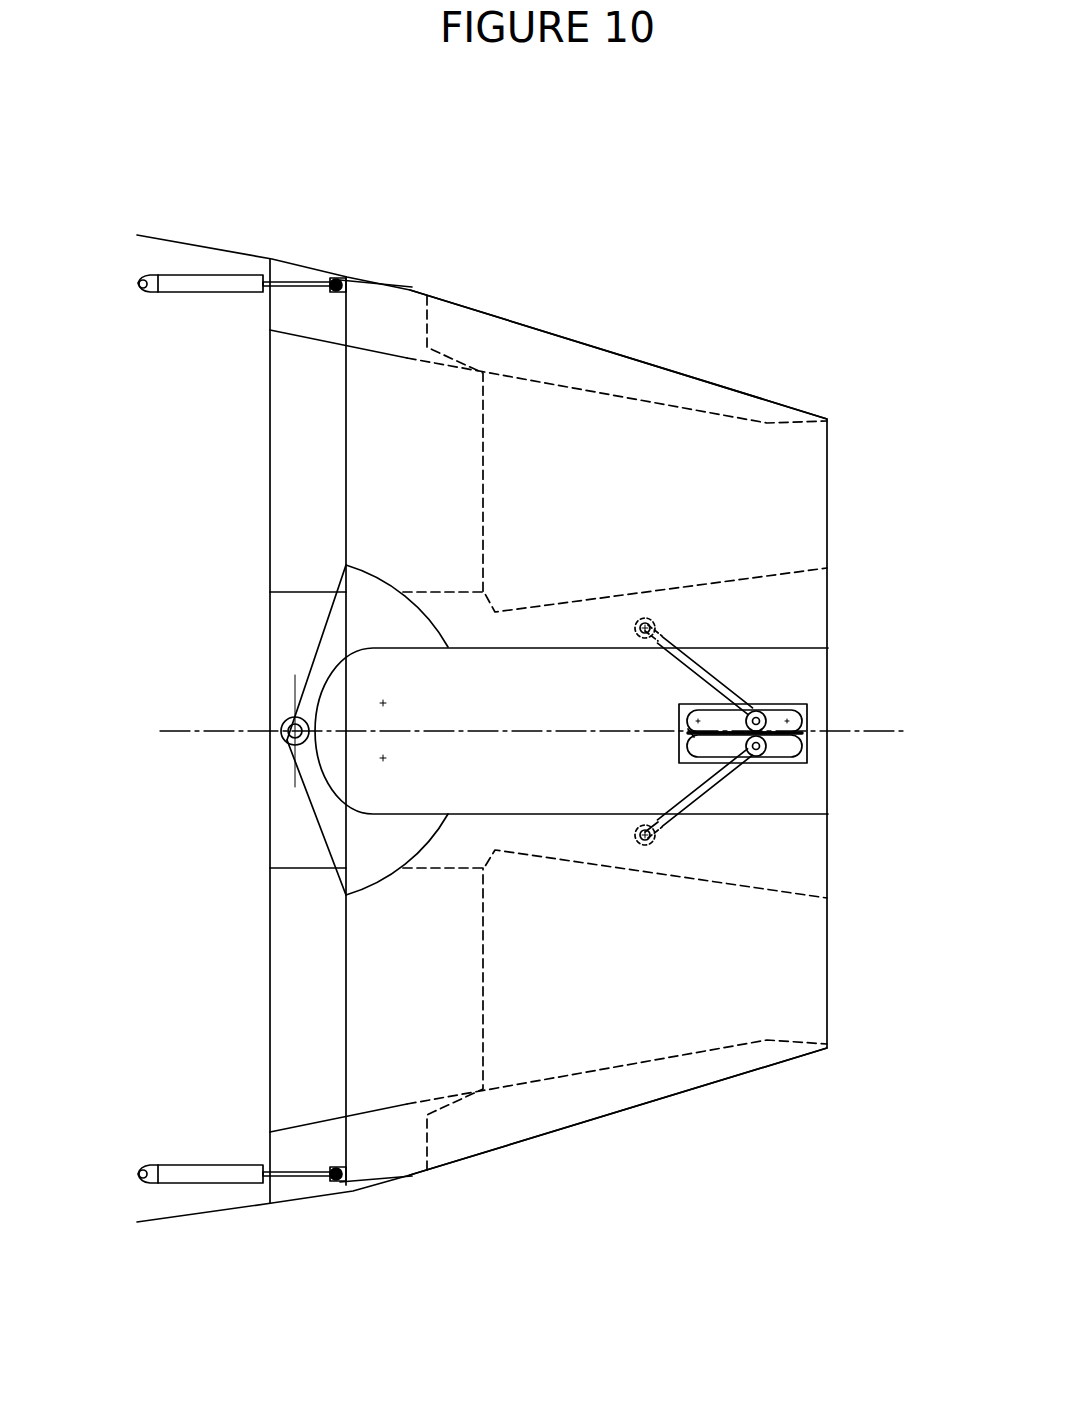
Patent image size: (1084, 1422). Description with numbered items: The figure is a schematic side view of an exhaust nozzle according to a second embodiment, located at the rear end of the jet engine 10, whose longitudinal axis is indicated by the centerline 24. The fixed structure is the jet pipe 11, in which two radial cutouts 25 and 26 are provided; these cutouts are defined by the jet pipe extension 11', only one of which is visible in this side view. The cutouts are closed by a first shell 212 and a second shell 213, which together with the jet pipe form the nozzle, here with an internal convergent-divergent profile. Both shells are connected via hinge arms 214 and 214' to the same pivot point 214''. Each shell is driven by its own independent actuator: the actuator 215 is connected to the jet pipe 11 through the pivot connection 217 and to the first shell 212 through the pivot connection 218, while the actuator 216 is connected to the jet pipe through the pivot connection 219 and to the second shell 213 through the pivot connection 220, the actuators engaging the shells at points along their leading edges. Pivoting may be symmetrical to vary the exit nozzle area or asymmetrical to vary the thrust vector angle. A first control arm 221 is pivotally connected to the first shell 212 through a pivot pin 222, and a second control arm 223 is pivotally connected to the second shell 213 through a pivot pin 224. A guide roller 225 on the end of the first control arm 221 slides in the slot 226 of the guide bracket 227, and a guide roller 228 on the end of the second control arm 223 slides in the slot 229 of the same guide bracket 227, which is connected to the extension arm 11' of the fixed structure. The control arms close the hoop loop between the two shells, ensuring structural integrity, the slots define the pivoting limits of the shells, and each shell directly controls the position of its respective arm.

The jet engine 10 is at (476, 659).
The jet pipe 11 is at (548, 401).
The jet pipe extension 11' is at (685, 529).
The centerline 24 is at (490, 745).
The radial cutout 25 is at (596, 765).
The radial cutout 26 is at (675, 948).
The first shell 212 is at (618, 338).
The second shell 213 is at (618, 1123).
The hinge arm 214 is at (474, 689).
The hinge arm 214' is at (285, 817).
The pivot point 214'' is at (212, 719).
The actuator 215 is at (236, 220).
The actuator 216 is at (236, 1219).
The pivot connection 217 is at (133, 334).
The pivot connection 218 is at (421, 224).
The pivot connection 219 is at (156, 1107).
The pivot connection 220 is at (403, 1240).
The first control arm 221 is at (800, 635).
The pivot pin 222 is at (640, 567).
The second control arm 223 is at (807, 817).
The pivot pin 224 is at (694, 892).
The guide roller 225 is at (824, 688).
The slot 226 is at (699, 758).
The guide bracket 227 is at (829, 699).
The guide roller 228 is at (828, 769).
The slot 229 is at (632, 694).